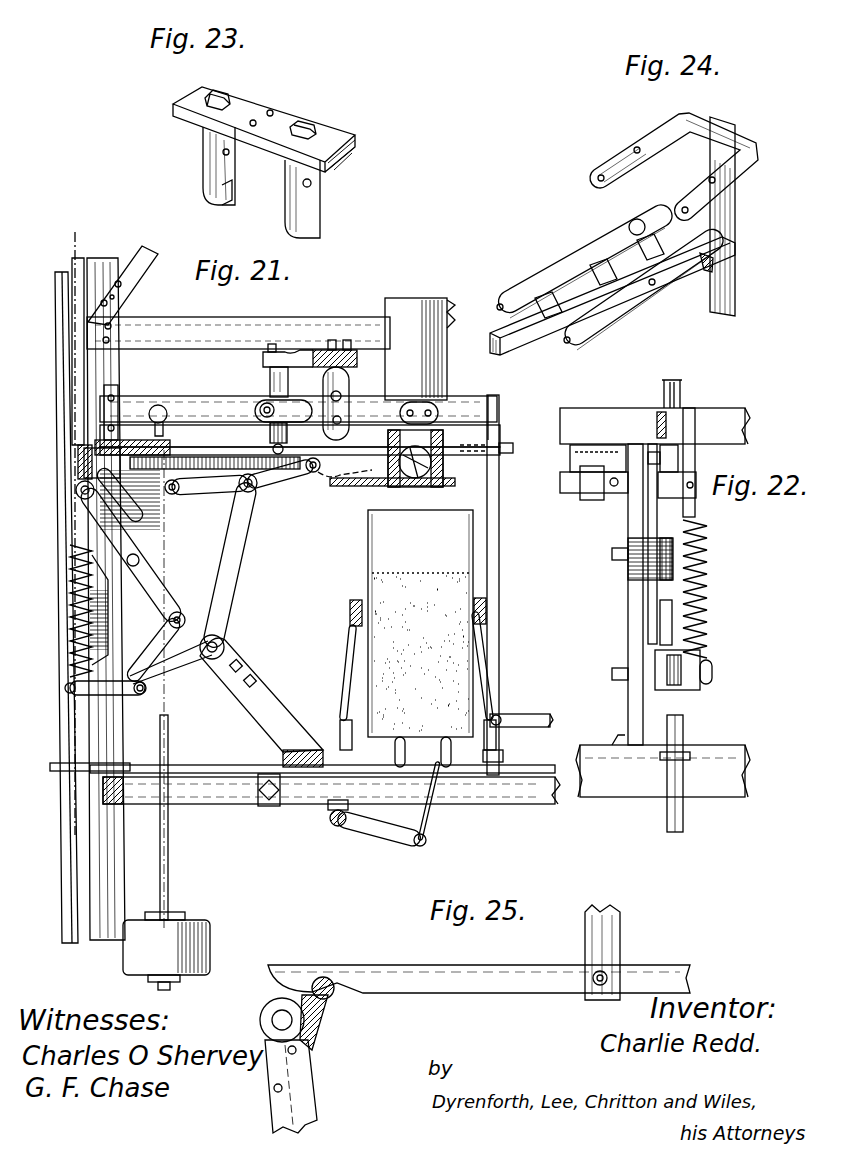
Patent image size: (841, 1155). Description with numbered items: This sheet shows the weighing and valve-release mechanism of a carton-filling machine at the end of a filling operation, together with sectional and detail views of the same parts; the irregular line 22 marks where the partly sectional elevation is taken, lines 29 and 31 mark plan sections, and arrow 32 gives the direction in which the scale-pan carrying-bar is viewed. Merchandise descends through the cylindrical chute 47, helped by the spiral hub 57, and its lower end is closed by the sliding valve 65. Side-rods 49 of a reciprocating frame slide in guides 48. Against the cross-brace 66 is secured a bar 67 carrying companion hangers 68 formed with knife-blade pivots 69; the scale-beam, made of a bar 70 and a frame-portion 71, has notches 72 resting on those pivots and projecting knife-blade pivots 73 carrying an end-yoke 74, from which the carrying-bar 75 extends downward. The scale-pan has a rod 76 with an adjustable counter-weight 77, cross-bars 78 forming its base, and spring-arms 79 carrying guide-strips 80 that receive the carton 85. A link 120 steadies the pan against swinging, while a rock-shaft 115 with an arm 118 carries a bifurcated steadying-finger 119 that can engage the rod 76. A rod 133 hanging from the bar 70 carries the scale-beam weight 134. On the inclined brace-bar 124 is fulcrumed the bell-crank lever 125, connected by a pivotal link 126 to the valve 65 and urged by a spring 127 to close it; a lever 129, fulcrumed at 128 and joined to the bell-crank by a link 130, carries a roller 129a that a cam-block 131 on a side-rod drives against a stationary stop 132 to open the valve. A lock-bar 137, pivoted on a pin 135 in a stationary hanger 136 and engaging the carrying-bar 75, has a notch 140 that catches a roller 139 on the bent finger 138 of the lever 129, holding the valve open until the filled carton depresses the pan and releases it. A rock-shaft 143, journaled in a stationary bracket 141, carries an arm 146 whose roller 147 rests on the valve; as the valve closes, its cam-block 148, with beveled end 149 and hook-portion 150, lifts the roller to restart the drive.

In FIG. 21, the irregular section line 22 is at (85, 822).
In FIG. 21, the plan section line 29 is at (45, 468).
In FIG. 21, the plan section line 31 is at (40, 512).
In FIG. 21, the direction arrow 32 is at (545, 584).
In FIG. 21, the cylindrical measuring-receptacle or chute 47 is at (432, 300).
In FIG. 21, the guides 48 is at (55, 768).
In FIG. 21, the side-rods 49 is at (58, 318).
In FIG. 22, the side-rods 49 is at (683, 815).
In FIG. 21, the hub 57 is at (395, 488).
In FIG. 21, the sliding valve 65 is at (355, 488).
In FIG. 21, the cross-brace 66 is at (278, 318).
In FIG. 21, the bar 67 is at (335, 352).
In FIG. 23, the bar 67 is at (343, 140).
In FIG. 21, the hangers or brackets 68 is at (345, 392).
In FIG. 23, the hangers or brackets 68 is at (352, 202).
In FIG. 21, the knife-blade pivots 69 is at (342, 426).
In FIG. 23, the knife-blade pivots 69 is at (232, 197).
In FIG. 21, the bar 70 is at (225, 400).
In FIG. 22, the bar 70 is at (660, 400).
In FIG. 24, the bar 70 is at (530, 333).
In FIG. 21, the frame-portion 71 is at (284, 412).
In FIG. 24, the frame-portion 71 is at (682, 292).
In FIG. 21, the notches 72 is at (288, 400).
In FIG. 24, the notches 72 is at (630, 315).
In FIG. 21, the knife-blade pivots 73 is at (435, 417).
In FIG. 24, the knife-blade pivots 73 is at (702, 272).
In FIG. 21, the end-yoke 74 is at (480, 405).
In FIG. 24, the end-yoke 74 is at (740, 182).
In FIG. 21, the rod or bar 75 is at (100, 895).
In FIG. 24, the rod or bar 75 is at (737, 288).
In FIG. 21, the rod or bolt 76 is at (478, 760).
In FIG. 21, the adjustable counter-weight 77 is at (268, 808).
In FIG. 21, the cross-bars 78 is at (440, 765).
In FIG. 21, the springs or spring-arms 79 is at (492, 660).
In FIG. 21, the guide-strips 80 is at (490, 610).
In FIG. 21, the carton 85 is at (368, 552).
In FIG. 21, the rock-shaft 115 is at (335, 832).
In FIG. 21, the laterally-extending arm 118 is at (380, 838).
In FIG. 21, the scale-pan steadying-finger 119 is at (428, 812).
In FIG. 21, the link 120 is at (538, 714).
In FIG. 21, the inclined brace-bar 124 is at (262, 730).
In FIG. 22, the inclined brace-bar 124 is at (630, 718).
In FIG. 21, the valve-opening and closing bell-crank lever 125 is at (222, 605).
In FIG. 22, the valve-opening and closing bell-crank lever 125 is at (705, 686).
In FIG. 21, the pivotal link 126 is at (250, 500).
In FIG. 21, the spring 127 is at (70, 622).
In FIG. 22, the spring 127 is at (708, 582).
In FIG. 21, the fulcrum 128 is at (150, 562).
In FIG. 22, the fulcrum 128 is at (645, 562).
In FIG. 21, the lever 129 is at (165, 590).
In FIG. 22, the lever 129 is at (660, 535).
In FIG. 25, the lever 129 is at (265, 1010).
In FIG. 22, the roller 129a is at (690, 495).
In FIG. 21, the pivotal link 130 is at (150, 655).
In FIG. 22, the pivotal link 130 is at (668, 637).
In FIG. 21, the cam-block 131 is at (70, 655).
In FIG. 21, the stationary stop 132 is at (125, 458).
In FIG. 22, the stationary stop 132 is at (680, 458).
In FIG. 21, the rod 133 is at (170, 850).
In FIG. 21, the scale-beam weight 134 is at (210, 945).
In FIG. 21, the pin 135 is at (276, 446).
In FIG. 25, the pin 135 is at (595, 988).
In FIG. 21, the stationary hanger 136 is at (264, 402).
In FIG. 25, the stationary hanger 136 is at (622, 942).
In FIG. 21, the lock-bar 137 is at (505, 449).
In FIG. 25, the lock-bar 137 is at (420, 968).
In FIG. 21, the laterally-bent finger 138 is at (78, 497).
In FIG. 25, the laterally-bent finger 138 is at (310, 1027).
In FIG. 21, the roller 139 is at (80, 482).
In FIG. 22, the roller 139 is at (658, 447).
In FIG. 25, the roller 139 is at (332, 998).
In FIG. 21, the notch 140 is at (148, 450).
In FIG. 25, the notch 140 is at (346, 985).
In FIG. 21, the stationary bracket 141 is at (150, 485).
In FIG. 21, the rock-shaft 143 is at (192, 492).
In FIG. 22, the rock-shaft 143 is at (580, 495).
In FIG. 21, the arm 146 is at (195, 470).
In FIG. 21, the roller 147 is at (270, 500).
In FIG. 21, the cam-block 148 is at (292, 492).
In FIG. 21, the beveled end 149 is at (335, 470).
In FIG. 21, the hook-portion 150 is at (305, 442).